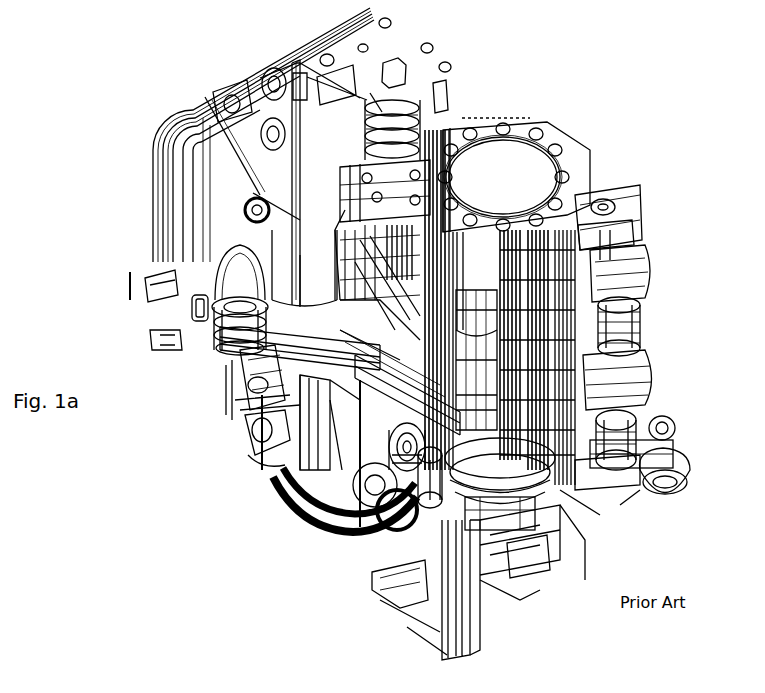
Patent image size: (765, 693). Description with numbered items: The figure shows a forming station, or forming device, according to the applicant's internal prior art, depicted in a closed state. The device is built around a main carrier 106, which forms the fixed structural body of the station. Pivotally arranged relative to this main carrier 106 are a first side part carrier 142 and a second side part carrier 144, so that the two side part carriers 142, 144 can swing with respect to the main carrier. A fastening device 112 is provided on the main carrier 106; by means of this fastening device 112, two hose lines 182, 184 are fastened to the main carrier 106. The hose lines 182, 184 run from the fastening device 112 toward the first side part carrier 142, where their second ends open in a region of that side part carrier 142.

The main carrier 106 is at (260, 121).
The first side part carrier 142 is at (417, 207).
The second side part carrier 144 is at (568, 158).
The fastening device 112 is at (241, 437).
The hose line 182 is at (290, 510).
The hose line 184 is at (340, 532).